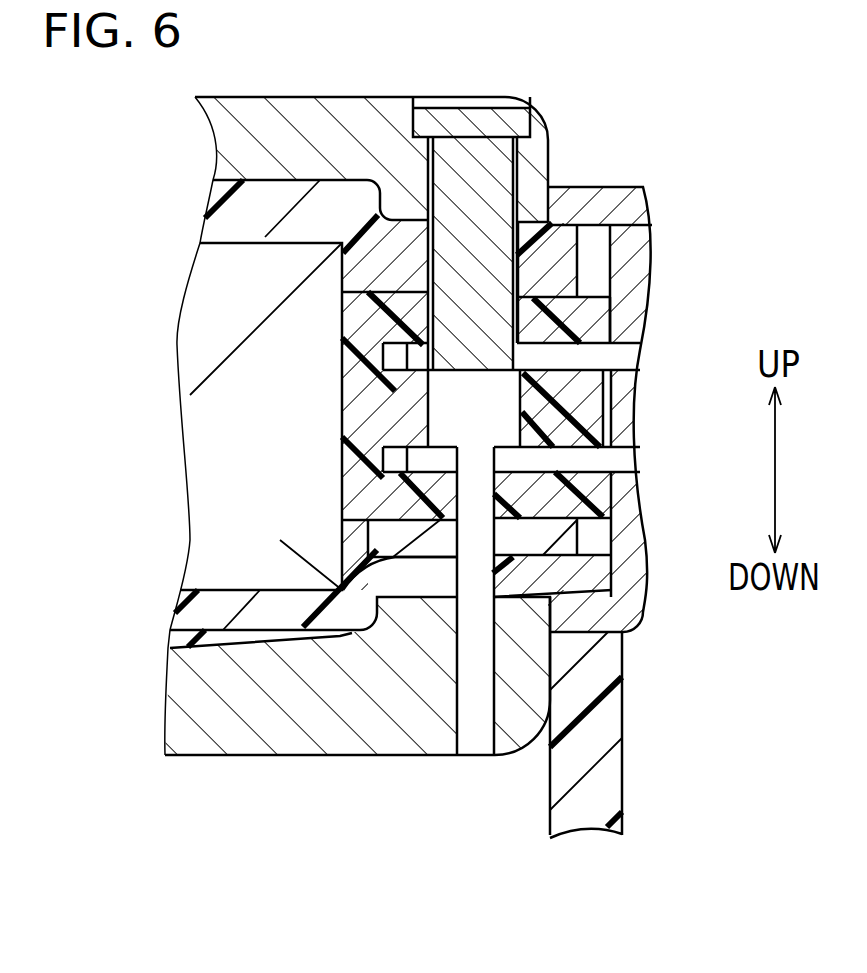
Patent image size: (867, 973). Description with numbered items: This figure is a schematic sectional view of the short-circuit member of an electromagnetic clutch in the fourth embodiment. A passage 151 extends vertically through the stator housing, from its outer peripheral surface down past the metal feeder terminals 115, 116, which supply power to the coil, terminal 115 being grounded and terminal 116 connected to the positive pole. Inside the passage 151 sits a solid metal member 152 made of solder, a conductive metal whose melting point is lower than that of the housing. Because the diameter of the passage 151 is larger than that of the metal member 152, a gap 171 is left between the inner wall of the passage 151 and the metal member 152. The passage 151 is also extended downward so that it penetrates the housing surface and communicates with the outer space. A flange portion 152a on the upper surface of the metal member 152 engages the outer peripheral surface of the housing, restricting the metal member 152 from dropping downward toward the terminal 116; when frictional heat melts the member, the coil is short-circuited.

The flange portion 152a is at (450, 118).
The metal member 152 is at (500, 268).
The passage 151 is at (517, 153).
The gap 171 is at (518, 280).
The feeder terminal 115 is at (612, 358).
The feeder terminal 116 is at (607, 460).